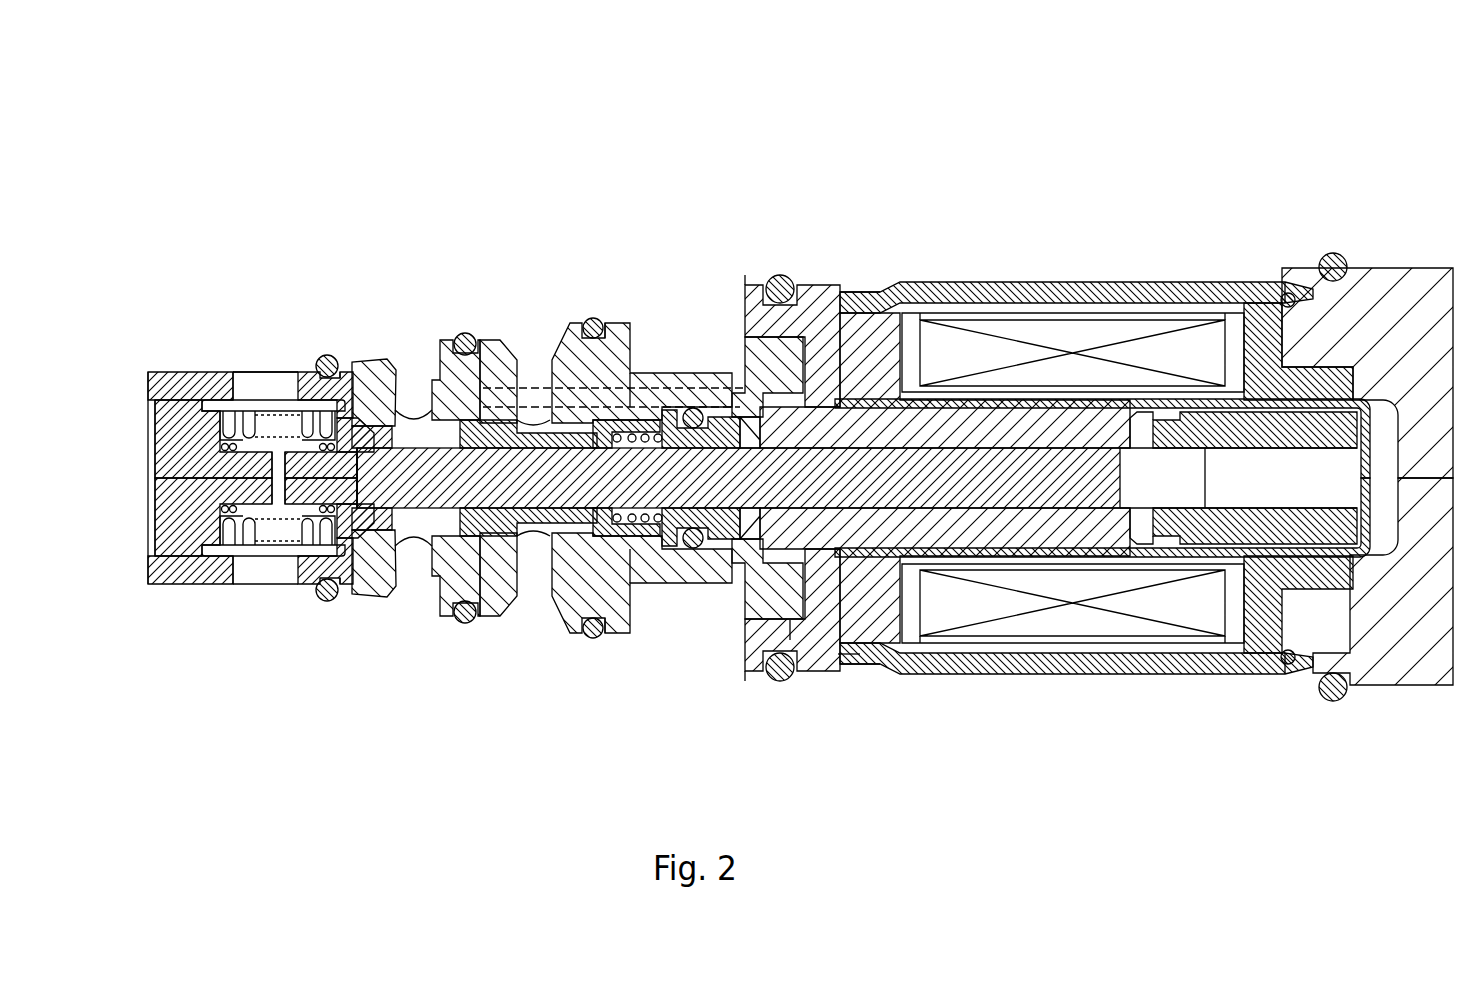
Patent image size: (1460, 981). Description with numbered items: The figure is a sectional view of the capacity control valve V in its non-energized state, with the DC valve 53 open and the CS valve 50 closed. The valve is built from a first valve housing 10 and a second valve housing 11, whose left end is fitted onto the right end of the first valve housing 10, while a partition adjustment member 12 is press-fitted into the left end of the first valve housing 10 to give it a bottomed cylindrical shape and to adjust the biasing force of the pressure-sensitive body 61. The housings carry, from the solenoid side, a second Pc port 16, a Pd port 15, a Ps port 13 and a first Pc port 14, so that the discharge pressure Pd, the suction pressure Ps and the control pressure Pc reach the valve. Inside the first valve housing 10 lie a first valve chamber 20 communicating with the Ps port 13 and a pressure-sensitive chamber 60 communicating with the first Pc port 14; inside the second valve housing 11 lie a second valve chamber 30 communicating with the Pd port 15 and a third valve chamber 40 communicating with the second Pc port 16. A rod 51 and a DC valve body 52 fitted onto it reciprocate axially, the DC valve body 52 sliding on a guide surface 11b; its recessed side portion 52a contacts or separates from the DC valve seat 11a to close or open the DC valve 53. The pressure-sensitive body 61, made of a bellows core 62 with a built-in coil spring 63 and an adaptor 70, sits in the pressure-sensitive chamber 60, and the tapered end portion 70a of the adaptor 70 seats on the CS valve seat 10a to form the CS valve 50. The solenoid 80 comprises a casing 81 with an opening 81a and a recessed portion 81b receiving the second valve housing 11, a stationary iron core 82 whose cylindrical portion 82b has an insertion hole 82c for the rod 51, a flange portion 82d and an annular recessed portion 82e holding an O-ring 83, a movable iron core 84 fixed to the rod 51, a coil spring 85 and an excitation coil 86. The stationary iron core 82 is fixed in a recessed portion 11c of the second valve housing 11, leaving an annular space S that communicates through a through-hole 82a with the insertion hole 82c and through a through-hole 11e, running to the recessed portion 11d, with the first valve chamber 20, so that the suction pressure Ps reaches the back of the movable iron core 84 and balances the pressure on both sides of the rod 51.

The first valve housing 10 is at (192, 372).
The CS valve seat 10a is at (331, 357).
The second valve housing 11 is at (571, 642).
The DC valve seat 11a is at (603, 320).
The guide surface 11b is at (468, 334).
The recessed portion 11c is at (750, 550).
The recessed portion 11d is at (468, 623).
The through-hole 11e is at (698, 408).
The partition adjustment member 12 is at (180, 470).
The Ps port 13 is at (383, 370).
The first Pc port 14 is at (245, 372).
The Pd port 15 is at (506, 340).
The second Pc port 16 is at (663, 372).
The first valve chamber 20 is at (445, 345).
The second valve chamber 30 is at (553, 420).
The third valve chamber 40 is at (622, 340).
The CS valve 50 is at (383, 190).
The rod 51 is at (1104, 432).
The DC valve body 52 is at (537, 532).
The recessed side portion 52a is at (585, 425).
The DC valve 53 is at (657, 163).
The pressure-sensitive chamber 60 is at (305, 372).
The pressure-sensitive body 61 is at (232, 558).
The bellows core 62 is at (243, 532).
The coil spring 63 is at (330, 537).
The adaptor 70 is at (327, 603).
The tapered end portion 70a is at (347, 362).
The solenoid 80 is at (1240, 264).
The casing 81 is at (750, 682).
The opening 81a is at (853, 640).
The recessed portion 81b is at (805, 640).
The stationary iron core 82 is at (1083, 392).
The through-hole 82a is at (786, 292).
The cylindrical portion 82b is at (1018, 425).
The insertion hole 82c is at (968, 462).
The flange portion 82d is at (847, 296).
The annular recessed portion 82e is at (680, 546).
The O-ring 83 is at (708, 546).
The movable iron core 84 is at (1237, 548).
The coil spring 85 is at (1140, 558).
The coil 86 is at (1060, 610).
The space S is at (762, 284).
The capacity control valve V is at (1345, 142).
The control pressure Pc is at (267, 398).
The suction pressure Ps is at (414, 366).
The discharge pressure Pd is at (533, 418).